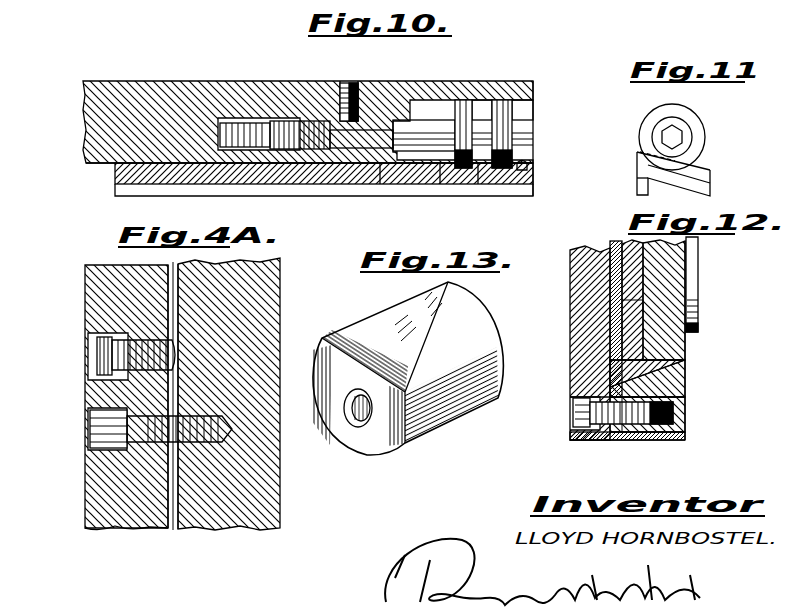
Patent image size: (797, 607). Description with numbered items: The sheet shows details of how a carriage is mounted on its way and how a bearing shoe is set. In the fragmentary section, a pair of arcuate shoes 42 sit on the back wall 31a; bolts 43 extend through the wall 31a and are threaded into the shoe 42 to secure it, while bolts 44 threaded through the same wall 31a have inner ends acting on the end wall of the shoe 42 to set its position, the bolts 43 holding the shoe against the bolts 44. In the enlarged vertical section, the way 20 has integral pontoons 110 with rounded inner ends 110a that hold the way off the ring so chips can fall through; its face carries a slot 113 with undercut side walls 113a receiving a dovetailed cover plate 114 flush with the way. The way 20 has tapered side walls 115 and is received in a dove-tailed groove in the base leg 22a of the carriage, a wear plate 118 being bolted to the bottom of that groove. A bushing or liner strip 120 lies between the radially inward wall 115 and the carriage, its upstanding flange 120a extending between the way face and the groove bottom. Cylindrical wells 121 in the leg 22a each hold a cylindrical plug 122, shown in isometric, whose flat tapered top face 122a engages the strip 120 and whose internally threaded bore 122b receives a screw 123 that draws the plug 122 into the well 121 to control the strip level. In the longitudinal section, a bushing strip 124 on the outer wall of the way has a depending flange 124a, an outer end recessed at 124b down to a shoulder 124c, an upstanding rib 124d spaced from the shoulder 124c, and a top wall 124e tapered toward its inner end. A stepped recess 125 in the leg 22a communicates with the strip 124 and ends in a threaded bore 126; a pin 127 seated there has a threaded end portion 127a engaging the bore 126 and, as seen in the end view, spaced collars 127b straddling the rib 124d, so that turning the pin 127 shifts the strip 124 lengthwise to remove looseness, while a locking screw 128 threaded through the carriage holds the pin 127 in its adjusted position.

In FIG. 12, the way 20 is at (677, 346).
In FIG. 10, the base leg of the carriage 22a is at (238, 92).
In FIG. 12, the base leg of the carriage 22a is at (587, 368).
In FIG. 4A, the back wall 31a is at (118, 510).
In FIG. 4A, the arcuate shoe 42 is at (239, 524).
In FIG. 4A, the bolt 43 is at (105, 432).
In FIG. 4A, the bolt 44 is at (97, 357).
In FIG. 12, the pad or pontoon 110 is at (692, 268).
In FIG. 12, the rounded inner end 110a is at (697, 333).
In FIG. 12, the slot 113 is at (640, 300).
In FIG. 12, the undercut side wall 113a is at (630, 327).
In FIG. 12, the cover plate 114 is at (643, 278).
In FIG. 12, the tapered side wall of the way 115 is at (684, 350).
In FIG. 12, the wear plate 118 is at (620, 247).
In FIG. 12, the bushing or liner strip 120 is at (687, 382).
In FIG. 12, the upstanding flange 120a is at (618, 353).
In FIG. 12, the cylindrical well 121 is at (608, 437).
In FIG. 13, the cylindrical plug 122 is at (481, 348).
In FIG. 12, the cylindrical plug 122 is at (667, 438).
In FIG. 13, the flat tapered top face 122a is at (378, 355).
In FIG. 12, the flat tapered top face 122a is at (635, 437).
In FIG. 13, the internally threaded longitudinal bore 122b is at (360, 422).
In FIG. 12, the internally threaded longitudinal bore 122b is at (684, 415).
In FIG. 12, the screw 123 is at (573, 413).
In FIG. 10, the bushing strip 124 is at (317, 178).
In FIG. 11, the bushing strip 124 is at (706, 191).
In FIG. 10, the flange 124a is at (383, 178).
In FIG. 11, the flange 124a is at (640, 190).
In FIG. 10, the recess 124b is at (521, 170).
In FIG. 10, the shoulder 124c is at (440, 166).
In FIG. 10, the upstanding rib 124d is at (480, 166).
In FIG. 11, the upstanding rib 124d is at (706, 174).
In FIG. 10, the top wall 124e is at (190, 160).
In FIG. 10, the stepped recess 125 is at (484, 112).
In FIG. 10, the internally threaded bore 126 is at (249, 135).
In FIG. 10, the pin 127 is at (548, 145).
In FIG. 11, the pin 127 is at (696, 114).
In FIG. 10, the threaded end portion 127a is at (306, 128).
In FIG. 10, the collar 127b is at (500, 141).
In FIG. 11, the collar 127b is at (700, 144).
In FIG. 10, the locking screw 128 is at (364, 96).